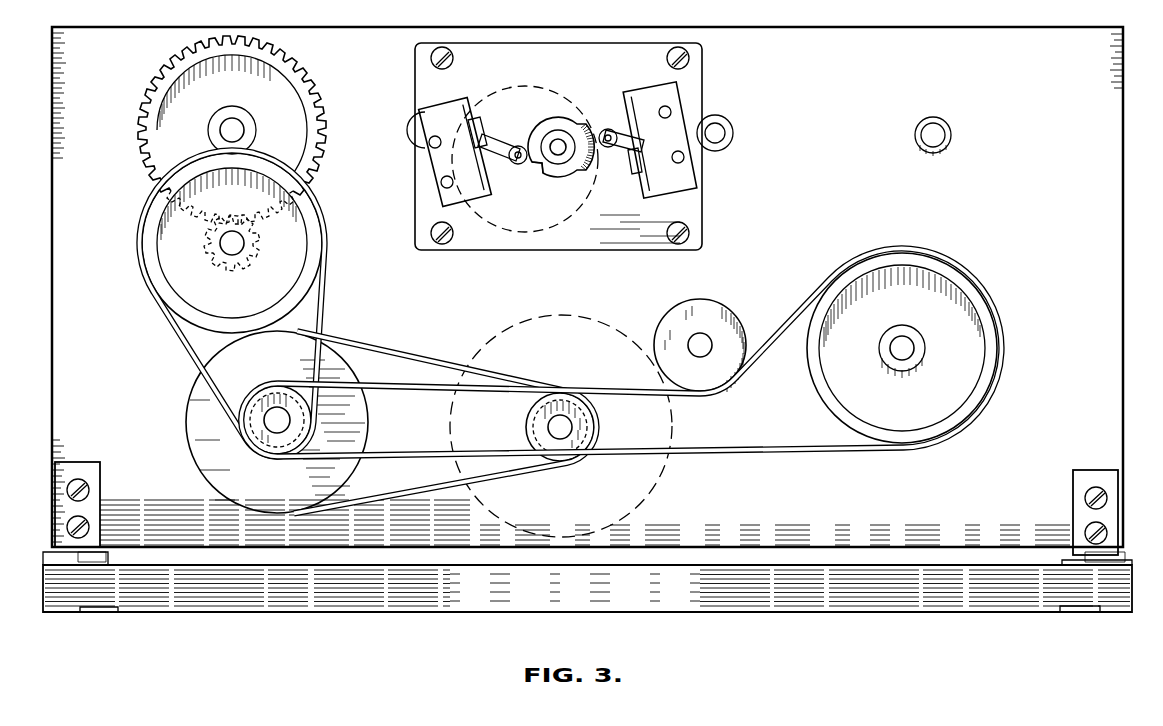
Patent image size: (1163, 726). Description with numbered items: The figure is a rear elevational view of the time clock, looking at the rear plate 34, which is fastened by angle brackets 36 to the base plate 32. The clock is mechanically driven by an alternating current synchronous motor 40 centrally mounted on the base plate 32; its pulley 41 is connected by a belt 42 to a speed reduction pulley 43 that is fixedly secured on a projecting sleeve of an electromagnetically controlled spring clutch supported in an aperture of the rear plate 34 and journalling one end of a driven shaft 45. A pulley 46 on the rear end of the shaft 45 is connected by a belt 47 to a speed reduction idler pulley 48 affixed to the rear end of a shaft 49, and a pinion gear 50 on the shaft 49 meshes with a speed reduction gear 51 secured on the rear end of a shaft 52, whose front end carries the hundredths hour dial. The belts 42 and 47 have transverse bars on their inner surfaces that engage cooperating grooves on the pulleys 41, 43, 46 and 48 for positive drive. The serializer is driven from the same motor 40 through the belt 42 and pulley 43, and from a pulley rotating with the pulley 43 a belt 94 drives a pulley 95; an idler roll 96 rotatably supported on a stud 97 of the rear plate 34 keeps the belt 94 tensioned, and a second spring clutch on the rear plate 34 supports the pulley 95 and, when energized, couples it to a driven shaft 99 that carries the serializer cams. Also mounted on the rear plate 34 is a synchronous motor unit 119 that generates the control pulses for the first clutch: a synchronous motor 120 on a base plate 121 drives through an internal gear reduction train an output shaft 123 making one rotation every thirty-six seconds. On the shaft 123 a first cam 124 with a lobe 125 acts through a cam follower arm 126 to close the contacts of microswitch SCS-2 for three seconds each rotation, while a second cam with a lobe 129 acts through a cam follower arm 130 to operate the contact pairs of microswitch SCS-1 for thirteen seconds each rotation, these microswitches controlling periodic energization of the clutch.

The base plate 32 is at (703, 600).
The rear plate 34 is at (1113, 300).
The angle brackets 36 is at (62, 504).
The synchronous motor 40 is at (657, 490).
The pulley 41 is at (582, 418).
The belt 42 is at (416, 480).
The speed reduction pulley 43 is at (213, 463).
The driven shaft 45 is at (264, 419).
The pulley 46 is at (258, 433).
The belt 47 is at (327, 302).
The speed reduction idler pulley 48 is at (147, 238).
The shaft 49 is at (229, 252).
The pinion gear 50 is at (261, 262).
The speed reduction gear 51 is at (288, 102).
The shaft 52 is at (235, 123).
The belt 94 is at (755, 454).
The pulley 95 is at (963, 338).
The idler roll 96 is at (713, 315).
The stud 97 is at (692, 342).
The driven shaft 99 is at (895, 358).
The synchronous motor unit 119 is at (572, 158).
The synchronous motor 120 is at (485, 97).
The base plate 121 is at (625, 238).
The output shaft 123 is at (557, 139).
The first cam 124 is at (557, 177).
The lobe 125 is at (530, 167).
The cam follower arm 126 is at (497, 148).
The lobe 129 is at (605, 168).
The cam follower arm 130 is at (625, 163).
The microswitch SCS-1 is at (680, 170).
The microswitch SCS-2 is at (440, 173).